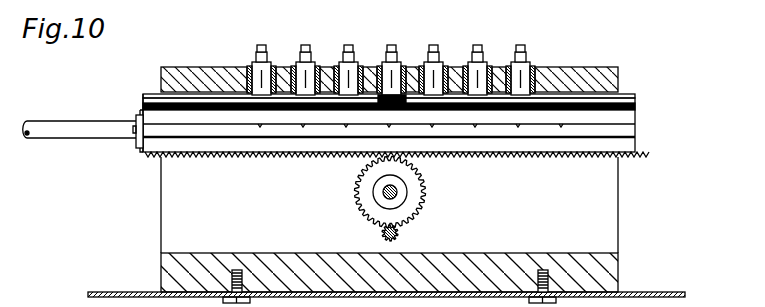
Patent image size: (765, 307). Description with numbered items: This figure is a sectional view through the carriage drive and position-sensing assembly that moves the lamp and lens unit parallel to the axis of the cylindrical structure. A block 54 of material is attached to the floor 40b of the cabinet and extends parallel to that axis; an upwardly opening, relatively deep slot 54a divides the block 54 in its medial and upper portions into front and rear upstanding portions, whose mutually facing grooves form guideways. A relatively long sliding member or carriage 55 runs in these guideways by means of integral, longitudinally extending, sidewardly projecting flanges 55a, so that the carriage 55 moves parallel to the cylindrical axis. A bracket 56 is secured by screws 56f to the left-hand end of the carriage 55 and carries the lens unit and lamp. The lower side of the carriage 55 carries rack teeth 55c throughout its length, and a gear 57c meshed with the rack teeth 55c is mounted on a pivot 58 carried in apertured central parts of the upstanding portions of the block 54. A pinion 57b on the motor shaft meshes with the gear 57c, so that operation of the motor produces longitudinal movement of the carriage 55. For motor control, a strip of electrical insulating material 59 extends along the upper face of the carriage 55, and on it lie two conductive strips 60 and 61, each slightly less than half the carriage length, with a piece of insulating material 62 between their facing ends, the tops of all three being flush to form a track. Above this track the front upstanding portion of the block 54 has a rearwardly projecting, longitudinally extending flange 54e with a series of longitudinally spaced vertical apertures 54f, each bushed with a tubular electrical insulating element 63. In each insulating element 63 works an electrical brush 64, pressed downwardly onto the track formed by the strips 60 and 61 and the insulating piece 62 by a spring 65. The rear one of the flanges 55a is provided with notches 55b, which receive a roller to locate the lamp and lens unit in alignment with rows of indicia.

The floor 40b is at (137, 292).
The block 54 is at (610, 272).
The slot 54a is at (172, 198).
The flange 54e is at (602, 72).
The vertical apertures 54f is at (247, 70).
The carriage 55 is at (630, 118).
The flanges 55a is at (628, 135).
The notches 55b is at (432, 129).
The rack teeth 55c is at (538, 160).
The bracket 56 is at (70, 127).
The screws 56f is at (135, 139).
The pinion 57b is at (401, 235).
The gear 57c is at (418, 193).
The pivot 58 is at (384, 191).
The strip of electrical insulating material 59 is at (558, 112).
The conductive strip 60 is at (153, 100).
The conductive strip 61 is at (624, 99).
The piece of insulating material 62 is at (407, 96).
The tubular electrical insulating element 63 is at (292, 62).
The electrical brush 64 is at (306, 73).
The spring 65 is at (390, 47).